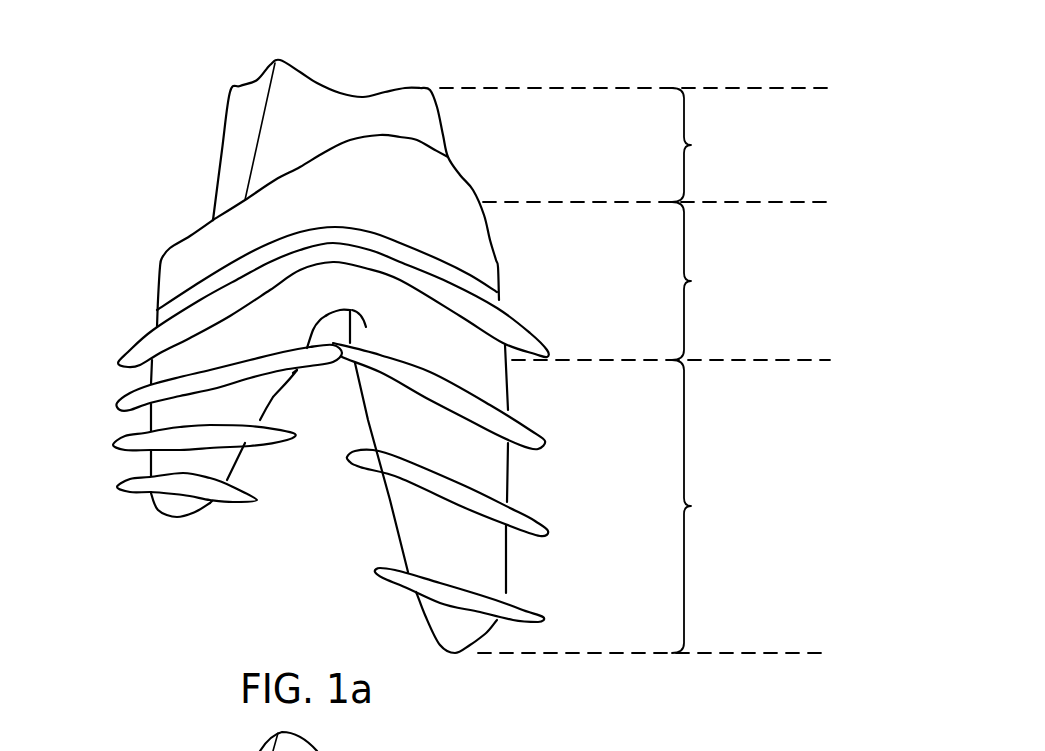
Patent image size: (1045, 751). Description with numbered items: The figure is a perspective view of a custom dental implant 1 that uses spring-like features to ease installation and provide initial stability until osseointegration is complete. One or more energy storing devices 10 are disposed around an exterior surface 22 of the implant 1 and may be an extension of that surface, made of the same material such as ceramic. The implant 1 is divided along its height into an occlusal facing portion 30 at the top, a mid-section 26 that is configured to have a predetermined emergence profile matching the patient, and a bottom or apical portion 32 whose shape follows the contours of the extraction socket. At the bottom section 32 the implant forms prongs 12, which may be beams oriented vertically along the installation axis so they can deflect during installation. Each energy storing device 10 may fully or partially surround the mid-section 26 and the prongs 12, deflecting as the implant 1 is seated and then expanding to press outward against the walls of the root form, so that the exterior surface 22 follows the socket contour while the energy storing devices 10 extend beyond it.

The custom dental implant 1 is at (127, 112).
The energy storing device 10 is at (530, 336).
The prongs 12 is at (500, 562).
The exterior surface 22 is at (140, 382).
The mid-section 26 is at (656, 281).
The occlusal facing portion 30 is at (635, 145).
The bottom/apical portion 32 is at (654, 506).